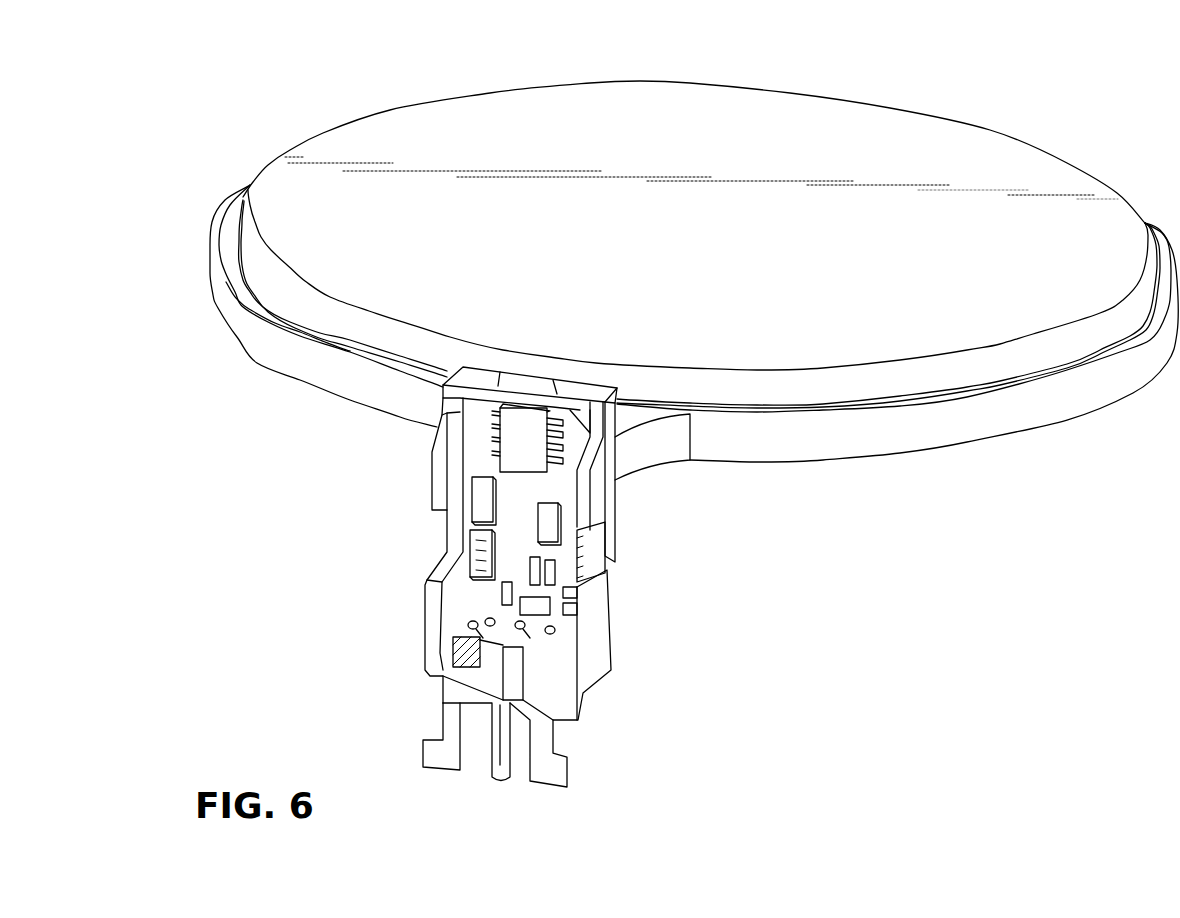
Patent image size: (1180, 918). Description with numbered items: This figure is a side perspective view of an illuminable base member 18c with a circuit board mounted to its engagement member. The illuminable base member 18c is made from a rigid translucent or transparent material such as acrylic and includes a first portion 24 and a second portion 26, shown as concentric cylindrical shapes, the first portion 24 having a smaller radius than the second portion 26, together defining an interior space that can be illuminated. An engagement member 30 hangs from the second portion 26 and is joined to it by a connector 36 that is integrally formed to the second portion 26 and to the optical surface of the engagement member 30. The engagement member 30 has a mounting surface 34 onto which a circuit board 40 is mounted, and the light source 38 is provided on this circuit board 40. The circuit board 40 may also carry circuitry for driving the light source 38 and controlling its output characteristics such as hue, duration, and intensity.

The illuminable base member 18c is at (1008, 100).
The first portion 24 is at (268, 182).
The second portion 26 is at (942, 433).
The engagement member 30 is at (396, 601).
The mounting surface 34 is at (500, 520).
The connector 36 is at (647, 449).
The light source 38 is at (522, 435).
The circuit board 40 is at (553, 553).